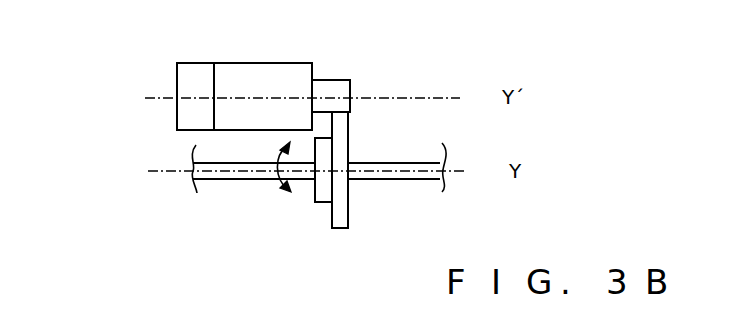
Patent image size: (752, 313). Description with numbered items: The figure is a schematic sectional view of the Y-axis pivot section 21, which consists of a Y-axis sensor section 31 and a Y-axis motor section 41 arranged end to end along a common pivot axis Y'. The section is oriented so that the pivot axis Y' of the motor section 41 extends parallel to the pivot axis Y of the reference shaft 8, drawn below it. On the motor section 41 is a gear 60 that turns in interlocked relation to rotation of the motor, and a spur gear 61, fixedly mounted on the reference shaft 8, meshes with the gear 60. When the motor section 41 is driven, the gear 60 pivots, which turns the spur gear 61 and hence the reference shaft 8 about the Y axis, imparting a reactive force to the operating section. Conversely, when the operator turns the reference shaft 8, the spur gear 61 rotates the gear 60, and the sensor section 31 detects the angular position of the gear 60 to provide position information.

The Y-axis pivot section 21 is at (148, 62).
The Y-axis sensor section 31 is at (197, 63).
The Y-axis motor 41 is at (269, 63).
The gear 60 is at (350, 80).
The spur gear 61 is at (350, 133).
The reference shaft 8 is at (247, 179).